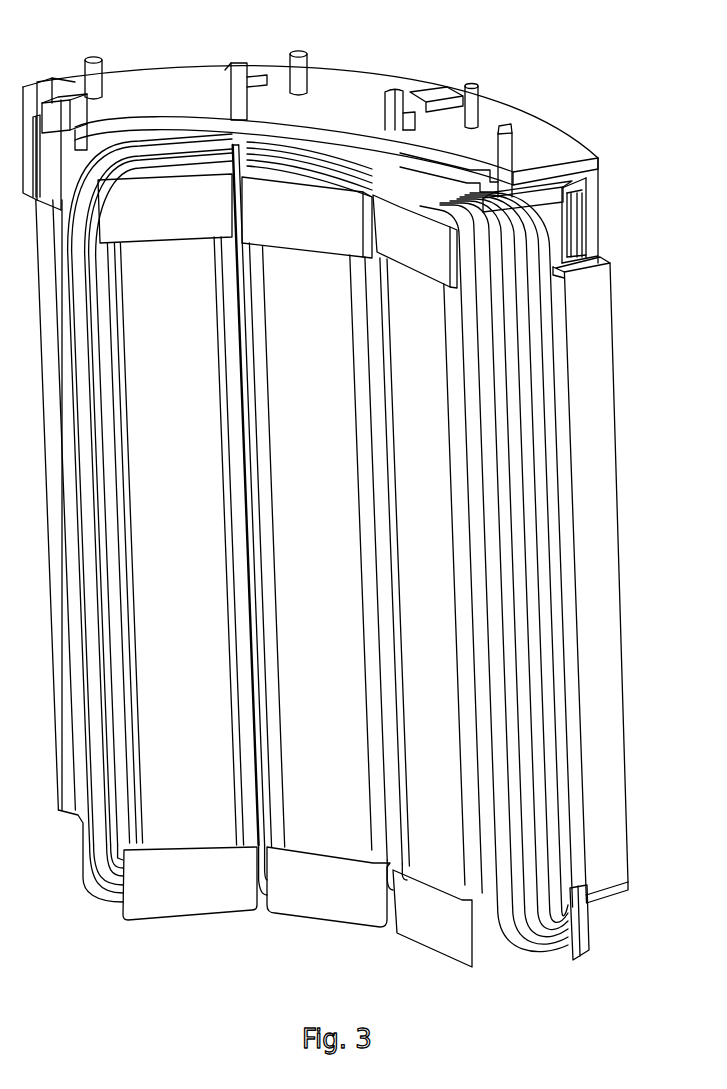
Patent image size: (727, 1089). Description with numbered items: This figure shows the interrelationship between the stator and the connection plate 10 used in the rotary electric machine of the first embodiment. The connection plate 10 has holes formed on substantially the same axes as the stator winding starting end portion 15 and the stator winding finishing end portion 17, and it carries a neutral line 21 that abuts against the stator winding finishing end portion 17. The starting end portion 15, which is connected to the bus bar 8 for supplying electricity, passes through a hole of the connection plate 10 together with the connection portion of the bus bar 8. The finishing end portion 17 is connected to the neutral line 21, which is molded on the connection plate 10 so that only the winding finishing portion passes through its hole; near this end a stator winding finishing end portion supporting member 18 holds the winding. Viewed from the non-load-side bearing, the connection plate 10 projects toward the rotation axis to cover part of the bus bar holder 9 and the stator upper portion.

The bus bar 8 is at (596, 234).
The bus bar holder 9 is at (601, 240).
The connection plate 10 is at (567, 153).
The stator winding starting end portion 15 is at (473, 83).
The stator winding finishing end portion 17 is at (507, 148).
The stator winding finishing end portion supporting member 18 is at (583, 218).
The neutral line 21 is at (387, 100).